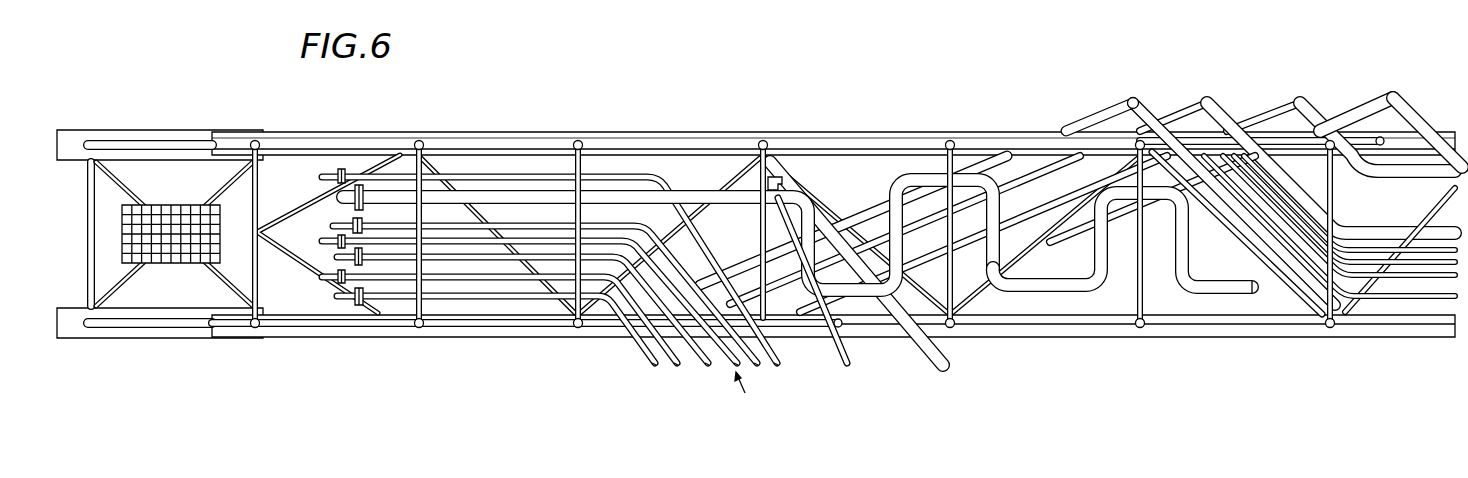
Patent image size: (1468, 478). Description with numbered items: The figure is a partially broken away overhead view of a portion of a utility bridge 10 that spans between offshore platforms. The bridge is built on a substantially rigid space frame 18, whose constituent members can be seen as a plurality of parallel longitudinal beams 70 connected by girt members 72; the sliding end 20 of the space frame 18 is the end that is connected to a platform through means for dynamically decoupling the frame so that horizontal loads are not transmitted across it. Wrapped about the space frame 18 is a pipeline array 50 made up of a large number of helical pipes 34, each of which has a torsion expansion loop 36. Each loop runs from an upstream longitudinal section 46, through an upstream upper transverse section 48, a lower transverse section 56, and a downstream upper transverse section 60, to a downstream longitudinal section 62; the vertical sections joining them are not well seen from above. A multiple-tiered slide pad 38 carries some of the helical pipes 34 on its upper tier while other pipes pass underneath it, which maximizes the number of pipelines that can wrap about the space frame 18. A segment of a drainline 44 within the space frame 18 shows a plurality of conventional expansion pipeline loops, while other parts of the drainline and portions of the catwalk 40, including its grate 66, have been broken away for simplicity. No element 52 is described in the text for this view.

The utility bridge 10 is at (756, 227).
The space frame 18 is at (445, 323).
The sliding end 20 is at (122, 340).
The helical pipes 34 is at (1413, 118).
The torsion expansion loop 36 is at (742, 395).
The multiple-tiered slide pad 38 is at (1178, 141).
The catwalk 40 is at (172, 265).
The drainline 44 is at (1083, 288).
The upstream longitudinal section 46 is at (1377, 222).
The upstream upper transverse section 48 is at (1250, 103).
The pipeline array 50 is at (1300, 280).
The posts 52 is at (818, 232).
The lower transverse section 56 is at (1103, 117).
The downstream upper transverse section 60 is at (655, 352).
The downstream longitudinal section 62 is at (497, 190).
The grate 66 is at (175, 205).
The longitudinal beams 70 is at (860, 137).
The girt members 72 is at (768, 167).